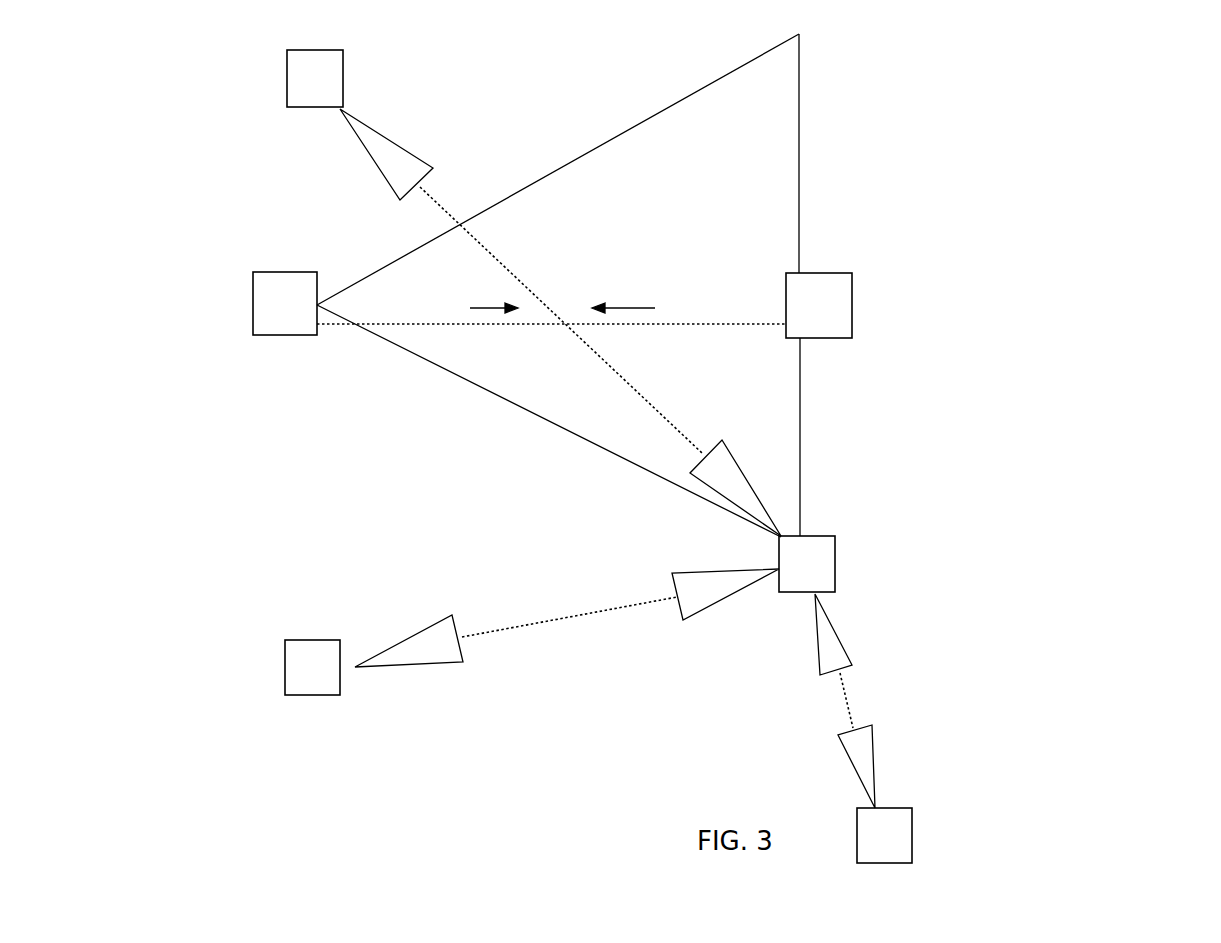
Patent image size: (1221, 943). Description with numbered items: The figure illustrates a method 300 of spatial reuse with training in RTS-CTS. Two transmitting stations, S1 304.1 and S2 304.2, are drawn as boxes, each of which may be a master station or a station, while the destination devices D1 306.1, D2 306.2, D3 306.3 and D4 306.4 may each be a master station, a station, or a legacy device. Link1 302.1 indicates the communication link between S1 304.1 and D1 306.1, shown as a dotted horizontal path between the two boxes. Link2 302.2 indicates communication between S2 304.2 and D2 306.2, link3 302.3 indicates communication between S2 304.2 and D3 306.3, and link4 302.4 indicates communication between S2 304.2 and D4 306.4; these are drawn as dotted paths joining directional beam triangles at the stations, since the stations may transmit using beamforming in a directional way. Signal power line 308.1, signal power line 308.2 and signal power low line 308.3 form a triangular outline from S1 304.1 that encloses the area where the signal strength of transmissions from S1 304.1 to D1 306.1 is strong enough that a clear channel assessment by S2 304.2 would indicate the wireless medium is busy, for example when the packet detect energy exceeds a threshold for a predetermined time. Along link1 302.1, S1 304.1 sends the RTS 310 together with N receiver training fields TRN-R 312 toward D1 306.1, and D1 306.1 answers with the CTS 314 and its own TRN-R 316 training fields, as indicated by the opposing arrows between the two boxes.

The method of spatial reuse with training in RTS-CTS 300 is at (1108, 140).
The link1 302.1 is at (735, 328).
The link2 302.2 is at (535, 620).
The link3 302.3 is at (845, 686).
The link4 302.4 is at (637, 396).
The S1 304.1 is at (292, 246).
The S2 304.2 is at (835, 553).
The D1 306.1 is at (820, 273).
The D2 306.2 is at (310, 640).
The D3 306.3 is at (912, 835).
The D4 306.4 is at (287, 85).
The signal power line 308.1 is at (660, 108).
The signal power line 308.2 is at (800, 133).
The signal power low line 308.3 is at (490, 400).
The RTS 310 is at (453, 305).
The N receiver training fields (TRN-R) 312 is at (380, 303).
The CTS 314 is at (675, 295).
The TRN-R 316 is at (744, 295).